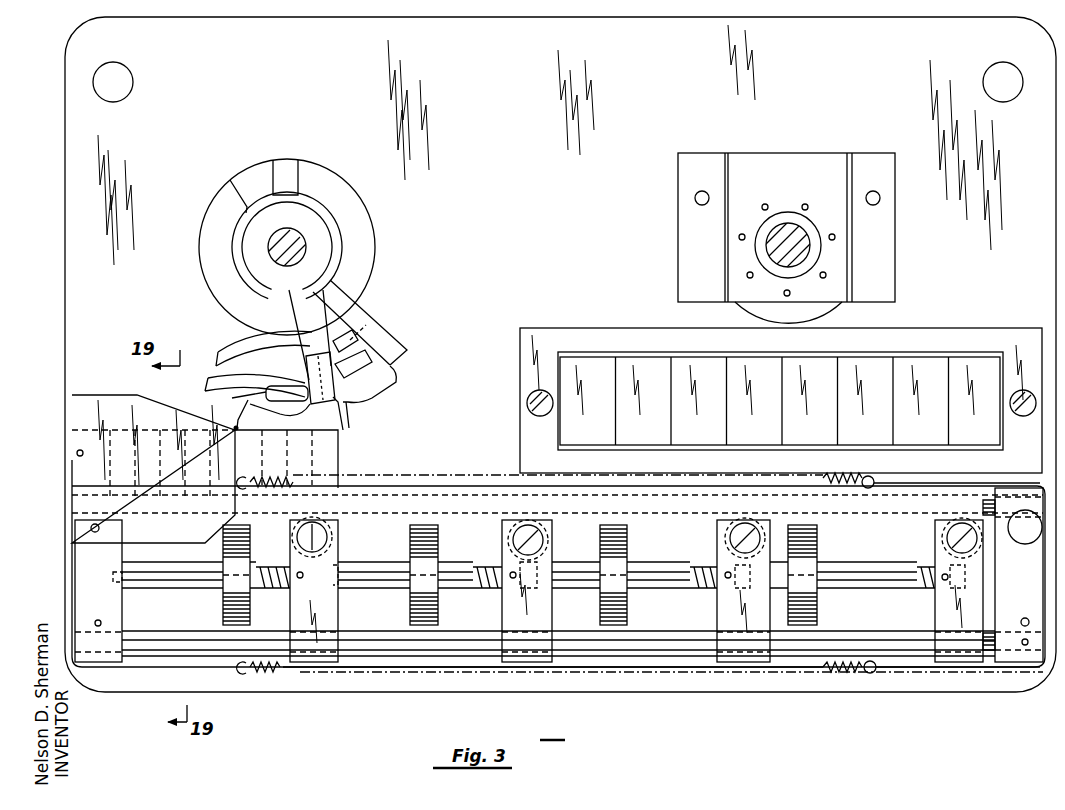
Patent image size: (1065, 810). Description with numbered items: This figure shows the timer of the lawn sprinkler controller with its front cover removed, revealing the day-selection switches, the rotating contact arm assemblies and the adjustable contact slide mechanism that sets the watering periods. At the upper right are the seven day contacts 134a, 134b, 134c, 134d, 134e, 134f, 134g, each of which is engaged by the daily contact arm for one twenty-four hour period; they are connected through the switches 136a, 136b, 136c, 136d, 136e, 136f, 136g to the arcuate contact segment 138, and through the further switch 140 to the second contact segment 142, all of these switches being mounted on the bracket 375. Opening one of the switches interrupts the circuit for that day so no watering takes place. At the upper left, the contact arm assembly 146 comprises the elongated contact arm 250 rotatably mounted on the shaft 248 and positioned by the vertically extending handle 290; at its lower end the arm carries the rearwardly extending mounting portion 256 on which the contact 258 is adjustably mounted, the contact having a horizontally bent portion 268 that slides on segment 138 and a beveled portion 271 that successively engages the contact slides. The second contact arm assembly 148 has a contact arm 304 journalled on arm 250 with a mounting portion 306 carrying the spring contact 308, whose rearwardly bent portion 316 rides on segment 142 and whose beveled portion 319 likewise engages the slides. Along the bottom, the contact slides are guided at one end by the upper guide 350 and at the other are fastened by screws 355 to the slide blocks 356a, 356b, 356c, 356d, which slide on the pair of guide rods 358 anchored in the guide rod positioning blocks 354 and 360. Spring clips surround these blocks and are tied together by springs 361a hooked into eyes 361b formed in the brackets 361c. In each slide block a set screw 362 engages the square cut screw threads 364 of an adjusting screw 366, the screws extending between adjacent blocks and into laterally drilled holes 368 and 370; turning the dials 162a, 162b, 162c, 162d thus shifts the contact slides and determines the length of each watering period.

The contact 134a is at (826, 276).
The contact 134b is at (835, 238).
The contact 134c is at (818, 199).
The contact 134d is at (763, 206).
The contact 134e is at (739, 237).
The contact 134f is at (747, 275).
The contact 134g is at (790, 293).
The switch 136a is at (997, 433).
The switch 136b is at (942, 433).
The switch 136c is at (886, 433).
The switch 136d is at (831, 433).
The switch 136e is at (776, 433).
The switch 136f is at (718, 433).
The switch 136g is at (664, 433).
The switch 140 is at (605, 433).
The contact segment 138 is at (222, 379).
The contact segment 142 is at (217, 353).
The contact arm assembly 146 is at (294, 337).
The contact arm assembly 148 is at (392, 316).
The dial 162a is at (222, 610).
The dial 162b is at (438, 604).
The dial 162c is at (627, 604).
The dial 162d is at (817, 601).
The shaft 248 is at (276, 248).
The contact arm 250 is at (296, 313).
The mounting portion 256 is at (307, 366).
The contact 258 is at (230, 420).
The horizontally bent portion 268 is at (262, 393).
The beveled portion 271 is at (238, 421).
The handle 290 is at (300, 176).
The contact arm 304 is at (358, 318).
The mounting portion 306 is at (403, 352).
The spring contact 308 is at (358, 409).
The rearwardly bent portion 316 is at (346, 354).
The beveled portion 319 is at (346, 431).
The upper guide 350 is at (110, 395).
The guide rod positioning block 354 is at (80, 570).
The screw 355 is at (308, 518).
The slide block 356a is at (336, 616).
The slide block 356b is at (545, 605).
The slide block 356c is at (728, 640).
The slide block 356d is at (975, 623).
The guide rod 358 is at (988, 498).
The guide block 360 is at (1013, 663).
The spring 361a is at (502, 478).
The eye 361b is at (868, 700).
The bracket 361c is at (80, 566).
The set screw 362 is at (299, 572).
The square cut screw threads 364 is at (484, 567).
The adjusting screw 366 is at (190, 577).
The laterally drilled hole 368 is at (297, 590).
The laterally drilled hole 370 is at (118, 582).
The bracket 375 is at (530, 333).